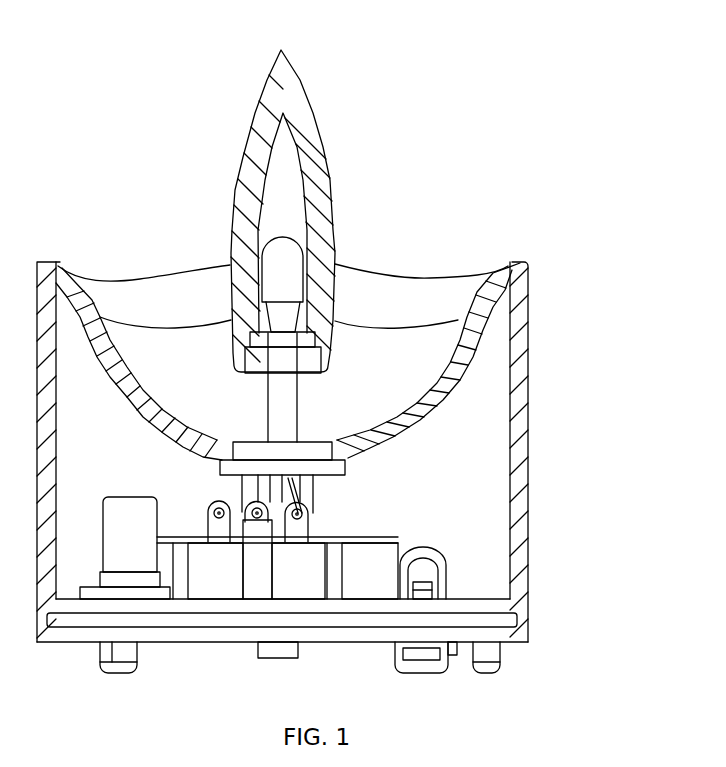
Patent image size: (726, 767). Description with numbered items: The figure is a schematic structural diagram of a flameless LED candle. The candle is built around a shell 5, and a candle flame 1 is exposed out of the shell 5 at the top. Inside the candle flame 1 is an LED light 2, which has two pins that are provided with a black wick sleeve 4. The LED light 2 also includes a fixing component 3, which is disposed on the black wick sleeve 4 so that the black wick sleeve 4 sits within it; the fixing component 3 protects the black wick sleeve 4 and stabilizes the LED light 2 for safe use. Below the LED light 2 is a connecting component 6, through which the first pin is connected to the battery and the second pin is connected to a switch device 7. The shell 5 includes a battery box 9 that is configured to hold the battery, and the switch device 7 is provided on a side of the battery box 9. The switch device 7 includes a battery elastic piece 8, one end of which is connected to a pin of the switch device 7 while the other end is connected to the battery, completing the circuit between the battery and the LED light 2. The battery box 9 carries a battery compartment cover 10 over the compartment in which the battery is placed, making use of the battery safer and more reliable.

The candle flame 1 is at (302, 120).
The LED light 2 is at (297, 253).
The fixing component 3 is at (313, 343).
The black wick sleeve 4 is at (288, 408).
The shell 5 is at (518, 310).
The connecting component 6 is at (345, 468).
The switch device 7 is at (293, 530).
The battery elastic piece 8 is at (243, 537).
The battery box 9 is at (358, 565).
The battery compartment cover 10 is at (438, 572).